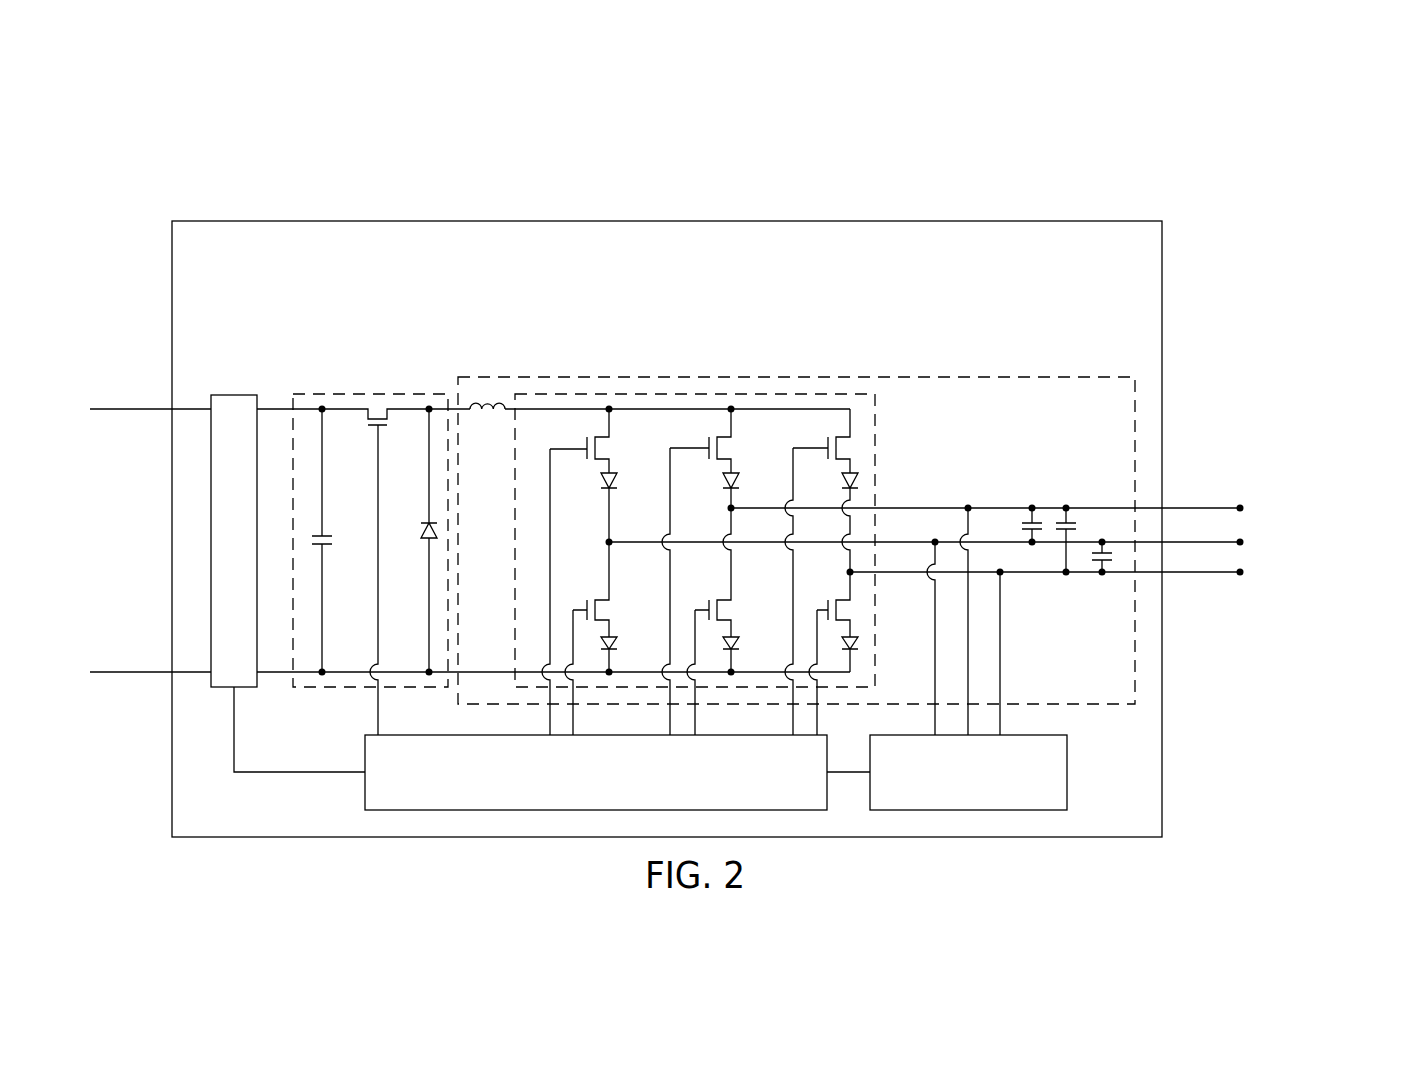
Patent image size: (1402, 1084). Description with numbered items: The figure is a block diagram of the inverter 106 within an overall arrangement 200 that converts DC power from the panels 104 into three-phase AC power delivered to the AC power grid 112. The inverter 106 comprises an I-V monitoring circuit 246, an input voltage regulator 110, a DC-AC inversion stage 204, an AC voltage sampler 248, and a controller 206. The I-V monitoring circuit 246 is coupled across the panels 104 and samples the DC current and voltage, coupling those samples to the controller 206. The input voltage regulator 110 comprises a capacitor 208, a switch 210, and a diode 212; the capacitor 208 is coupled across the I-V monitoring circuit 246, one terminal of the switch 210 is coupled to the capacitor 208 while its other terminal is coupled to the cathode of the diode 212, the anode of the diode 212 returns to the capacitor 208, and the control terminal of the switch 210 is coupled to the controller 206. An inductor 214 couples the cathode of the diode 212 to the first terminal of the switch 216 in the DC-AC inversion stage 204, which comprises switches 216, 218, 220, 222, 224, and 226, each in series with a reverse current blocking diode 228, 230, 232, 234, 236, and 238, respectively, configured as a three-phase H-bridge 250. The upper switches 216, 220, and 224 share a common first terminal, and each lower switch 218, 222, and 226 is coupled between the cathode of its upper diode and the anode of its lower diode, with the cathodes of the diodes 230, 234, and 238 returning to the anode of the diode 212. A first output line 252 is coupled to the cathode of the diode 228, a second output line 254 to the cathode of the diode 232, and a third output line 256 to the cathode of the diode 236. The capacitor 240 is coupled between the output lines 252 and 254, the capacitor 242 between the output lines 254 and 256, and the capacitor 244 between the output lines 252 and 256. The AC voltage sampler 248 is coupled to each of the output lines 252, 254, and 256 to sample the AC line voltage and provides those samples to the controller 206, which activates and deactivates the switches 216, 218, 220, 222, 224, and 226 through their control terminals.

The inverter system 200 is at (1219, 125).
The inverter 106 is at (667, 220).
The panels 104 is at (147, 540).
The I-V monitoring circuit 246 is at (234, 393).
The input voltage regulator 110 is at (402, 393).
The capacitor 208 is at (332, 537).
The switch 210 is at (388, 420).
The diode 212 is at (424, 530).
The DC-AC inversion stage 204 is at (603, 377).
The inductor 214 is at (483, 412).
The three-phase H-bridge 250 is at (818, 394).
The switch 216 is at (606, 450).
The switch 218 is at (606, 609).
The switch 220 is at (728, 450).
The switch 222 is at (728, 609).
The switch 224 is at (848, 446).
The switch 226 is at (848, 609).
The reverse current blocking diode 228 is at (603, 477).
The reverse current blocking diode 230 is at (642, 640).
The reverse current blocking diode 232 is at (725, 478).
The reverse current blocking diode 234 is at (764, 640).
The reverse current blocking diode 236 is at (855, 481).
The reverse current blocking diode 238 is at (855, 643).
The capacitor 240 is at (1028, 505).
The capacitor 242 is at (1070, 505).
The capacitor 244 is at (1100, 576).
The first output line 252 is at (1220, 540).
The second output line 254 is at (1185, 508).
The third output line 256 is at (1222, 575).
The controller 206 is at (769, 788).
The AC voltage sampler 248 is at (1047, 796).
The AC power grid 112 is at (1317, 541).